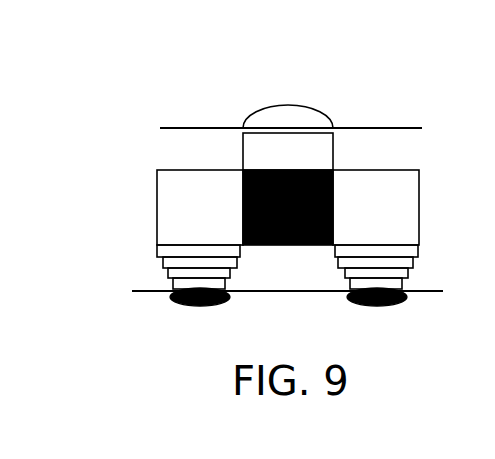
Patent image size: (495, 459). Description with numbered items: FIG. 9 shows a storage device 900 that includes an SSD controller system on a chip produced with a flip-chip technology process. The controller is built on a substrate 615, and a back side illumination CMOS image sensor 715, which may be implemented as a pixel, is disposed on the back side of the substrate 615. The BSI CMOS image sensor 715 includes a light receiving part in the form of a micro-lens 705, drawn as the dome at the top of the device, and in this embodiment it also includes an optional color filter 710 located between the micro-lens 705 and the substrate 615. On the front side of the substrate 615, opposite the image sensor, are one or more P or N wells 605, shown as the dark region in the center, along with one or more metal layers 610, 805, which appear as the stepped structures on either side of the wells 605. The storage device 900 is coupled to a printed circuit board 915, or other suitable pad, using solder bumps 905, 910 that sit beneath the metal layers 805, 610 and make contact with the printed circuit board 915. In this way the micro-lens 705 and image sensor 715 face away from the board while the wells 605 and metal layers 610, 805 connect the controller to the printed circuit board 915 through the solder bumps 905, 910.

The storage device 900 is at (168, 108).
The micro-lens 705 is at (314, 103).
The color filter 710 is at (334, 162).
The back side illumination CMOS image sensor 715 is at (423, 75).
The P or N well 605 is at (242, 183).
The substrate 615 is at (420, 183).
The metal layer 610 is at (413, 262).
The metal layer 805 is at (165, 262).
The printed circuit board 915 is at (266, 289).
The solder bump 905 is at (200, 306).
The solder bump 910 is at (372, 306).